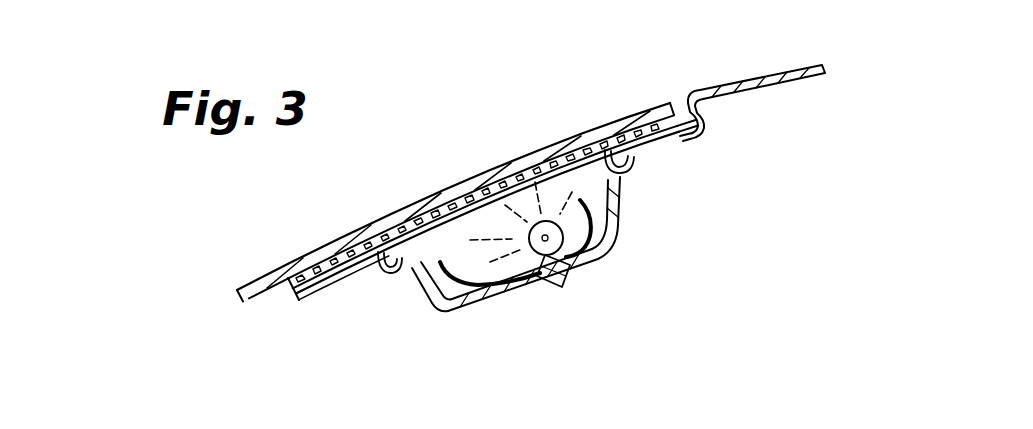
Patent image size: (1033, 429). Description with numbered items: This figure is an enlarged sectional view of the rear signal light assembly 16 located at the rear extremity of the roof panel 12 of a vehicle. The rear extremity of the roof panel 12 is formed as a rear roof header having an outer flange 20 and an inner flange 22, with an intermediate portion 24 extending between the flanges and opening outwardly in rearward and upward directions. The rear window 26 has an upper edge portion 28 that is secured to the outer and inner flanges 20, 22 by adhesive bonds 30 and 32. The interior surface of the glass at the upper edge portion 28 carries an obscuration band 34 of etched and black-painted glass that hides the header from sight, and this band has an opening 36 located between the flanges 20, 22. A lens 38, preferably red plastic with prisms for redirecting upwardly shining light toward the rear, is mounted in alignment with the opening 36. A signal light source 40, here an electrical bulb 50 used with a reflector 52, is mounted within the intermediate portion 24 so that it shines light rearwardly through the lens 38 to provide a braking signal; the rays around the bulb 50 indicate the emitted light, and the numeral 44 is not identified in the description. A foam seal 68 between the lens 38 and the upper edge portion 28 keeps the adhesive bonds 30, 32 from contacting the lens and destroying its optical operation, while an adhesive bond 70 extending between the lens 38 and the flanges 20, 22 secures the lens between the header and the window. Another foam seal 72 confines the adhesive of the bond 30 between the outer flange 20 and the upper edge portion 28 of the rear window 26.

The roof panel 12 is at (815, 66).
The rear signal light assembly 16 is at (683, 80).
The outer flange 20 is at (348, 277).
The inner flange 22 is at (660, 140).
The intermediate portion 24 is at (500, 303).
The rear window 26 is at (297, 258).
The upper edge portion 28 is at (673, 110).
The adhesive bond 30 is at (337, 287).
The adhesive bond 32 is at (687, 125).
The obscuration band 34 is at (322, 258).
The opening 36 is at (410, 225).
The lens 38 is at (481, 185).
The signal light source 40 is at (562, 290).
The light source 44 is at (511, 131).
The electrical bulb 50 is at (542, 287).
The reflector 52 is at (450, 312).
The seal 68 is at (372, 235).
The adhesive bond 70 is at (392, 267).
The seal 72 is at (277, 297).